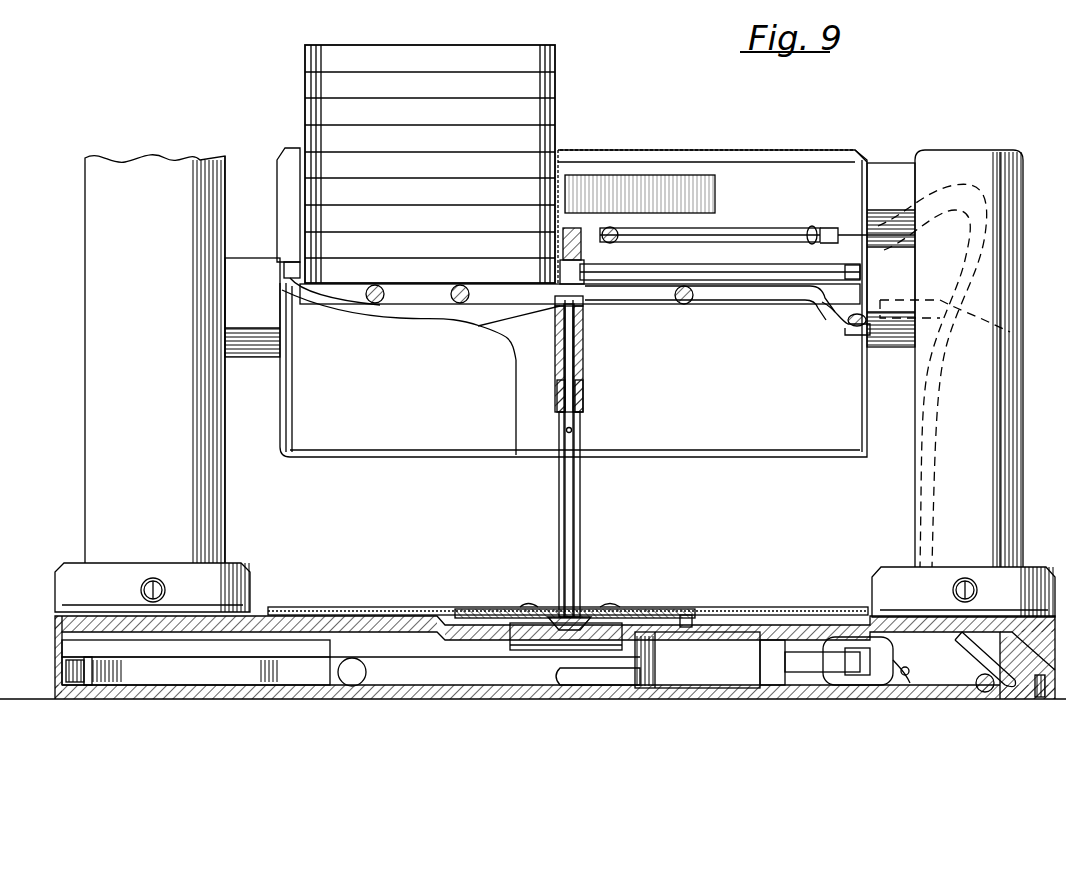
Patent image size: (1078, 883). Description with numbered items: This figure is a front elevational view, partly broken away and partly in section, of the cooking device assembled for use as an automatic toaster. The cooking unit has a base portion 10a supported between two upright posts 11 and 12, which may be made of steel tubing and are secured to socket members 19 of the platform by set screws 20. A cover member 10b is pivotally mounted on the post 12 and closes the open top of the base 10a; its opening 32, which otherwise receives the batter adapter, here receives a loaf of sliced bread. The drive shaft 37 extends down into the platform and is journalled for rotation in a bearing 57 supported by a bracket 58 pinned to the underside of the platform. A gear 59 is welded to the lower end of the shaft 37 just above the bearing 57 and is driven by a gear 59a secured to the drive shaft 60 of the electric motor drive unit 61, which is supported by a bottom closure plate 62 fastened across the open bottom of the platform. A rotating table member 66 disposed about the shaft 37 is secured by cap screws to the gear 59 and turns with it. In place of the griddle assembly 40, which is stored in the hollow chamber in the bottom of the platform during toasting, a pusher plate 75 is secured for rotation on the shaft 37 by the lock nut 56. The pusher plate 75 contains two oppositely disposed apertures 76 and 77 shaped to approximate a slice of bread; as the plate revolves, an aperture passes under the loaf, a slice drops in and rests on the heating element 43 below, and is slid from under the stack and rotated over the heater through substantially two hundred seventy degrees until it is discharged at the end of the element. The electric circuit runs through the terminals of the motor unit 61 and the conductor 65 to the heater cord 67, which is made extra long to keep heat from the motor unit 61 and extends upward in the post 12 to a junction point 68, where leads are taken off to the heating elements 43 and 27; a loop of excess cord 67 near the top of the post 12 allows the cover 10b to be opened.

The upright post 11 is at (95, 196).
The upright post 12 is at (962, 160).
The socket member 19 is at (250, 586).
The set screw 20 is at (160, 590).
The heating element 27 is at (735, 226).
The opening 32 is at (560, 158).
The drive shaft 37 is at (586, 356).
The griddle assembly 40 is at (197, 677).
The heating element 43 is at (763, 300).
The lock nut 56 is at (580, 245).
The bearing 57 is at (583, 628).
The bracket 58 is at (518, 635).
The gear 59 is at (642, 608).
The gear 59a is at (690, 640).
The drive shaft 60 is at (688, 660).
The electric motor drive unit 61 is at (730, 690).
The bottom closure plate 62 is at (777, 690).
The conductor 65 is at (905, 680).
The rotating table member 66 is at (775, 607).
The heater cord 67 is at (963, 688).
The junction point 68 is at (1012, 336).
The pusher plate 75 is at (855, 265).
The aperture 76 is at (300, 225).
The aperture 77 is at (770, 264).
The base portion 10a is at (388, 432).
The cover member 10b is at (705, 150).